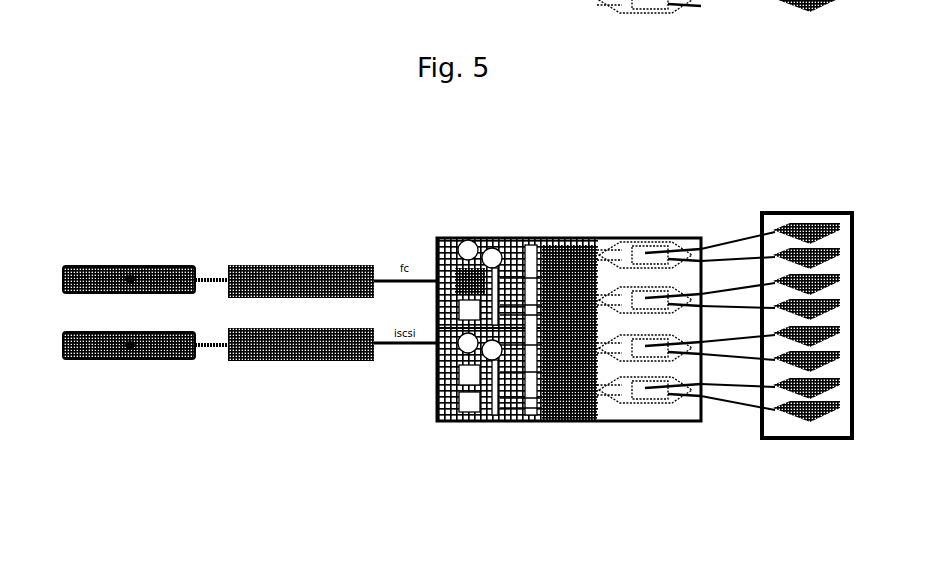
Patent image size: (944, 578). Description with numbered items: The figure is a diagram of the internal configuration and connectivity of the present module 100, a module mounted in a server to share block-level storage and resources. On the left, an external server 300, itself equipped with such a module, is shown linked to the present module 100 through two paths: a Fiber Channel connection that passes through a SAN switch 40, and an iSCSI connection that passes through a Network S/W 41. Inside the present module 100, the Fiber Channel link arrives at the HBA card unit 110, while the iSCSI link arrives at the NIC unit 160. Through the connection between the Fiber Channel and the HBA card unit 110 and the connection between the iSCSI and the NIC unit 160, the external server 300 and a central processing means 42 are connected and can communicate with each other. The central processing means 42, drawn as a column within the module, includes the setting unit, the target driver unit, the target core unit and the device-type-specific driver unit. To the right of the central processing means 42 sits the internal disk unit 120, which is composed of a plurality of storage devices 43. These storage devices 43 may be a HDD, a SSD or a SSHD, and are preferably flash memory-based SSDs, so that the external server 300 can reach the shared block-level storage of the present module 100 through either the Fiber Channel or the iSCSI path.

The external server 300 is at (90, 262).
The SAN switch 40 is at (262, 260).
The Network S/W 41 is at (272, 366).
The HBA card unit 110 is at (452, 243).
The NIC unit 160 is at (492, 366).
The central processing means 42 is at (568, 243).
The present module 100 is at (557, 255).
The internal disk unit 120 is at (660, 420).
The storage devices 43 is at (838, 444).